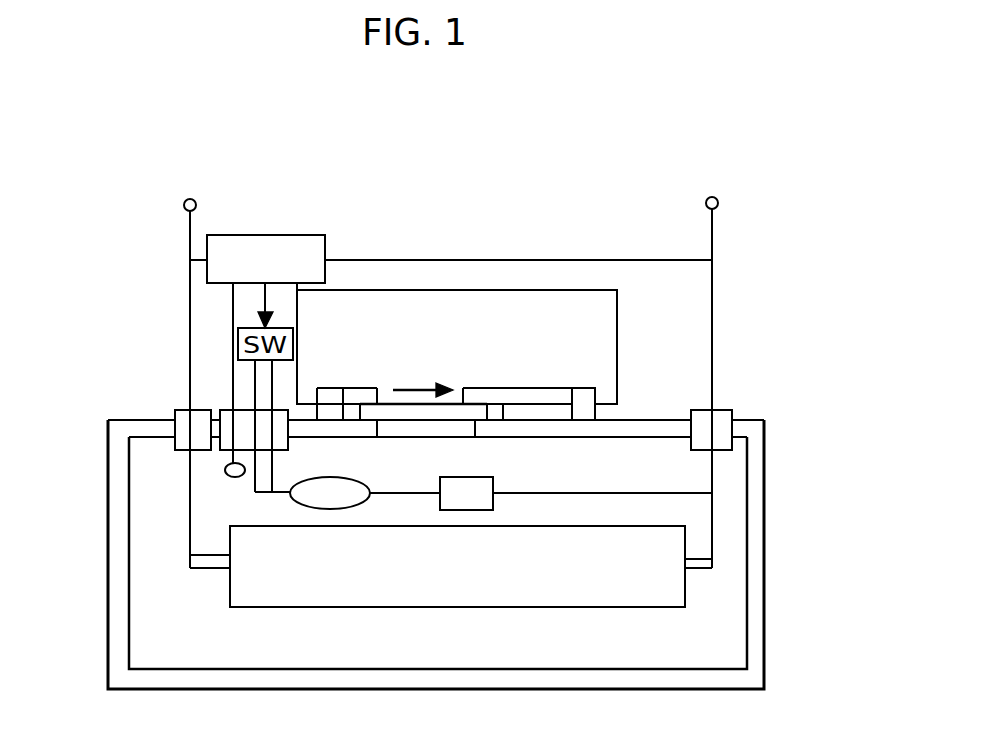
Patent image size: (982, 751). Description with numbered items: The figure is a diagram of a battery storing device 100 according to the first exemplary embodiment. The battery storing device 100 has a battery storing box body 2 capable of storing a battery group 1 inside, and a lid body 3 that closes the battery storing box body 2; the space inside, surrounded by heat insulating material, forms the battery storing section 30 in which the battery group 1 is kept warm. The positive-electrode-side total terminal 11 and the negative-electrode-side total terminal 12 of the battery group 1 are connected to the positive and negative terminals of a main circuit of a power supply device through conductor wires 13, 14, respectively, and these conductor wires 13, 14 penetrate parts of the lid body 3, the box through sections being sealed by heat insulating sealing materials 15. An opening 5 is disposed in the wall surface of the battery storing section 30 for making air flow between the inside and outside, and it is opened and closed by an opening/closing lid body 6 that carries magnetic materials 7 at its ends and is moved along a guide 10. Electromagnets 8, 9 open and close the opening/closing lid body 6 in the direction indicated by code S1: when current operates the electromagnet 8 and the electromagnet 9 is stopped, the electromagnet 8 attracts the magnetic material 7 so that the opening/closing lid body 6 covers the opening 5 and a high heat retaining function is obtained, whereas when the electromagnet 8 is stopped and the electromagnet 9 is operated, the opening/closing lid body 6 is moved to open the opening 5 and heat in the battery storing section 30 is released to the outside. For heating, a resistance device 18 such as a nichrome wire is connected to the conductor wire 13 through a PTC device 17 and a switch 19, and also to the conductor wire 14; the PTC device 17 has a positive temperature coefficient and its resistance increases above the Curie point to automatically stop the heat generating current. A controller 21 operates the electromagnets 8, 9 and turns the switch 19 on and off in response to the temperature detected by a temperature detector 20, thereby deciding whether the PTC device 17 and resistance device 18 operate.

The battery storing device 100 is at (463, 141).
The battery group 1 is at (670, 538).
The battery storing box body 2 is at (765, 558).
The lid body 3 is at (108, 421).
The opening 5 is at (414, 430).
The opening/closing lid body 6 is at (380, 401).
The magnetic material 7 is at (352, 397).
The electromagnet 8 is at (332, 392).
The electromagnet 9 is at (590, 392).
The guide 10 is at (523, 391).
The positive-electrode-side total terminal 11 is at (208, 568).
The negative-electrode-side total terminal 12 is at (697, 568).
The conductor wire 13 is at (189, 238).
The conductor wire 14 is at (713, 236).
The heat insulating sealing material 15 is at (242, 411).
The PTC device 17 is at (256, 492).
The resistance device 18 is at (493, 477).
The switch 19 is at (298, 327).
The temperature detector 20 is at (225, 470).
The controller 21 is at (280, 235).
The battery storing section 30 is at (712, 647).
The direction code S1 is at (432, 390).